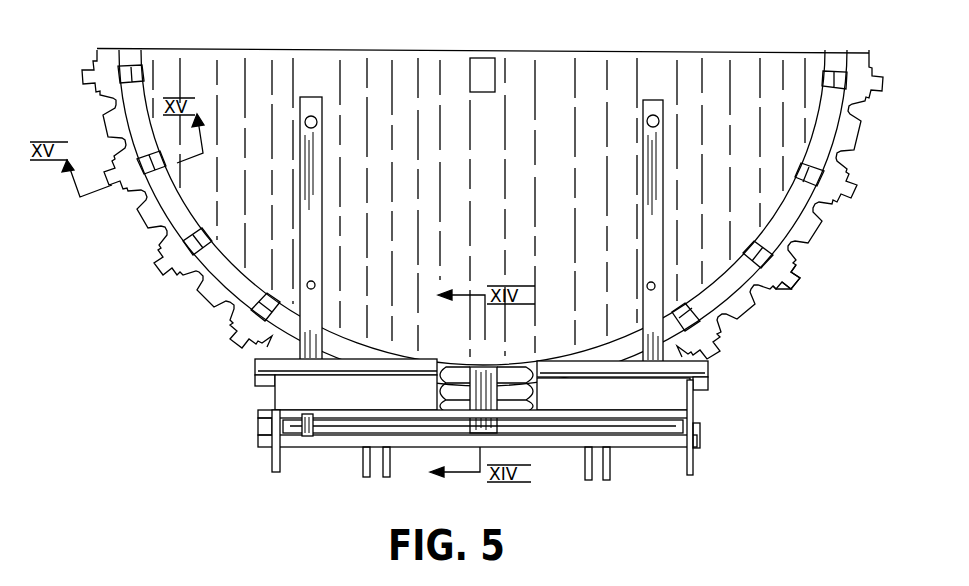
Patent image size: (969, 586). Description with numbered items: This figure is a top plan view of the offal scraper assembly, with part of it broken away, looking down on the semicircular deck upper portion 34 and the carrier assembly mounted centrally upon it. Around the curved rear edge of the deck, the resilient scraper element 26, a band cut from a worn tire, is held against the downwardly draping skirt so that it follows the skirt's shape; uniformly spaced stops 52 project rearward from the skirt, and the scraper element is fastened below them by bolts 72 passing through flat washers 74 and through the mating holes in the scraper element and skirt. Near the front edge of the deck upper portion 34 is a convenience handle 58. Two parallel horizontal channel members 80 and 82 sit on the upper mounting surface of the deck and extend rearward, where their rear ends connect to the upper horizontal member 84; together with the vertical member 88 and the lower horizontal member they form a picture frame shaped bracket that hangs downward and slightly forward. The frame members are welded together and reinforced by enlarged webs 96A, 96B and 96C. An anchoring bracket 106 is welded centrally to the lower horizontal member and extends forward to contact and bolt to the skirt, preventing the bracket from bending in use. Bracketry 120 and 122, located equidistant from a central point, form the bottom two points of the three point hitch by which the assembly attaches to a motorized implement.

The scraper element 26 is at (863, 54).
The deck upper portion 34 is at (750, 108).
The stops 52 is at (806, 162).
The convenience handle 58 is at (495, 78).
The bolts 72 is at (781, 291).
The flat washers 74 is at (796, 276).
The horizontal channel member 80 is at (322, 162).
The horizontal channel member 82 is at (663, 172).
The upper horizontal member 84 is at (363, 358).
The vertical member 88 is at (306, 437).
The enlarged web 96A is at (692, 474).
The enlarged web 96B is at (272, 456).
The enlarged web 96C is at (688, 399).
The anchoring bracket 106 is at (486, 383).
The bracketry 120 is at (389, 478).
The bracketry 122 is at (610, 480).